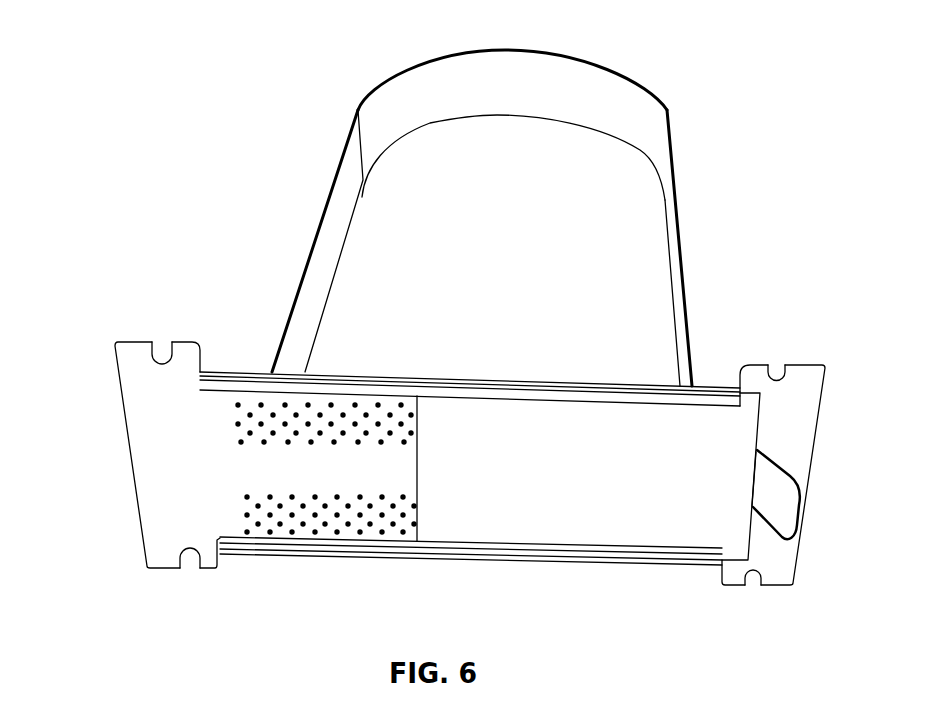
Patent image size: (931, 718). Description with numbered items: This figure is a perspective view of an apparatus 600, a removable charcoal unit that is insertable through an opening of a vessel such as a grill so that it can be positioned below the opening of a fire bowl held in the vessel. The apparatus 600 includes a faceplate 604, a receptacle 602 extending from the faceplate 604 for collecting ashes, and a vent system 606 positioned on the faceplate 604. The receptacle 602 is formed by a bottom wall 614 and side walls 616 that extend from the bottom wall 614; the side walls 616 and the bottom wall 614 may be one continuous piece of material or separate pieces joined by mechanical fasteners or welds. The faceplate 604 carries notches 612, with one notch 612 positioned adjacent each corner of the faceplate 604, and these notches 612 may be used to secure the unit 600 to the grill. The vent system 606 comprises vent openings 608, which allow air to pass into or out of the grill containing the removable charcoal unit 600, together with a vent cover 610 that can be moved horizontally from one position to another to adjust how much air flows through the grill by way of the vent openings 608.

The apparatus 600 is at (724, 56).
The receptacle 602 is at (520, 108).
The faceplate 604 is at (807, 426).
The vent system 606 is at (474, 570).
The vent openings 608 is at (238, 432).
The vent cover 610 is at (505, 465).
The notches 612 is at (162, 345).
The bottom wall 614 is at (615, 147).
The side walls 616 is at (400, 107).